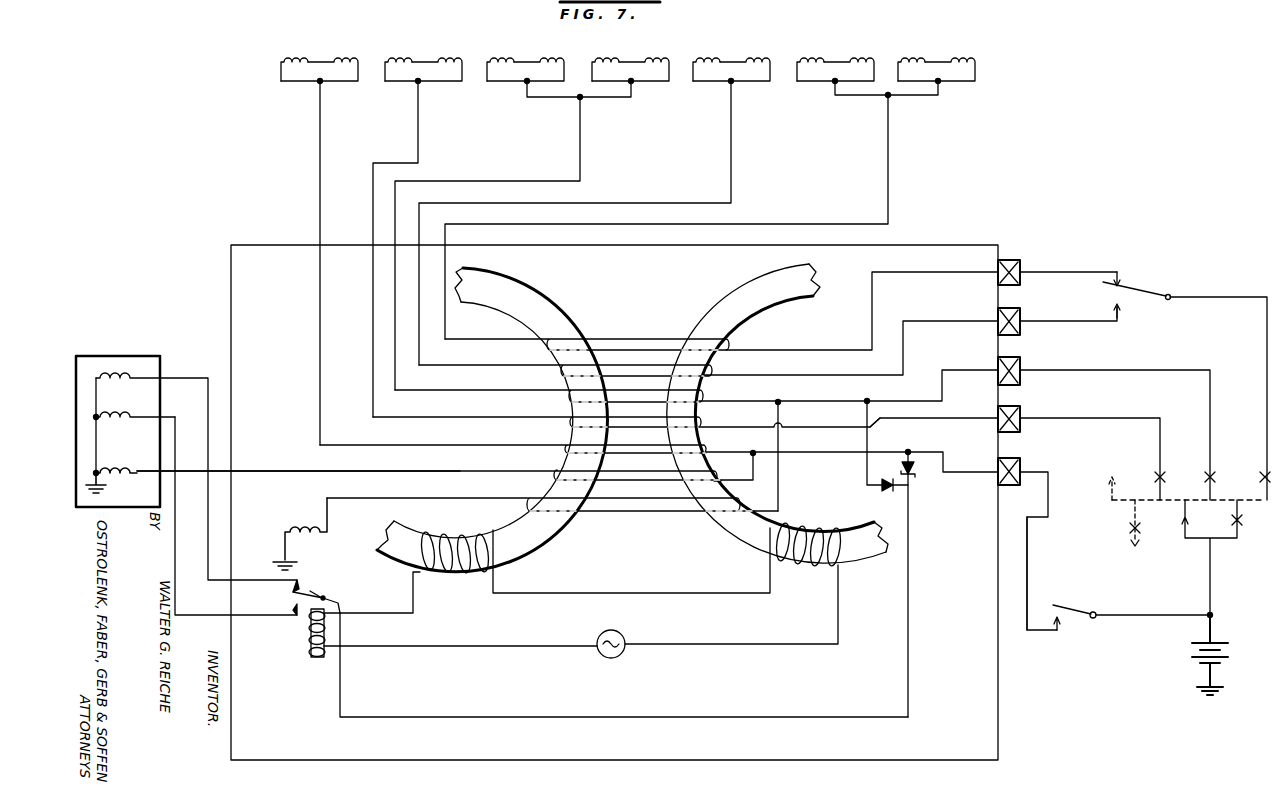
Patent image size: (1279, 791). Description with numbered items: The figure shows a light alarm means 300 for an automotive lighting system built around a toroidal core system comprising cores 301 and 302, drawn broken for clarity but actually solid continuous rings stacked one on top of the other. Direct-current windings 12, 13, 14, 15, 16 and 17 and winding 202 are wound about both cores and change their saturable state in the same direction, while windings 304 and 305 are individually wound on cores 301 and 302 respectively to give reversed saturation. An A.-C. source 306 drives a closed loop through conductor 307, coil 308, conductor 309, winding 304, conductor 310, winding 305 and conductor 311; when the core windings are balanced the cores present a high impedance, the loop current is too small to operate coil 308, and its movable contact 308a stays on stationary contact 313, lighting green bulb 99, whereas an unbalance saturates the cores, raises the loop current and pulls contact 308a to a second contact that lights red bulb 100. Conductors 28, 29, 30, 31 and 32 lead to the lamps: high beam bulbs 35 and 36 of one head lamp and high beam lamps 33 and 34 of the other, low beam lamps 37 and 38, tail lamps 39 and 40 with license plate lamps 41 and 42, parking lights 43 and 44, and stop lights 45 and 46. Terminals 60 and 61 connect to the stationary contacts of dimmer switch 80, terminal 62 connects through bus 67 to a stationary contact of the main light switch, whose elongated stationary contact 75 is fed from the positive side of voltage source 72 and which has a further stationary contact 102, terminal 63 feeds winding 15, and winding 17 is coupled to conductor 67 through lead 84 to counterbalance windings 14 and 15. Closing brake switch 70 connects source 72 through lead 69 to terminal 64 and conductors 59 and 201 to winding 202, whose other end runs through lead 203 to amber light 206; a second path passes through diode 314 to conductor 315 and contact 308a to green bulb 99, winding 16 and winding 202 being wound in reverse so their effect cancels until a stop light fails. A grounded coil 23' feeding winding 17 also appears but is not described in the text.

The winding 12 is at (640, 340).
The winding 13 is at (650, 356).
The winding 14 is at (652, 382).
The winding 15 is at (650, 408).
The winding 16 is at (646, 436).
The winding 17 is at (622, 512).
The coil 23' is at (297, 534).
The conductor 28 is at (888, 142).
The conductor 29 is at (731, 140).
The conductor 30 is at (580, 138).
The conductor 31 is at (418, 130).
The conductor 32 is at (320, 128).
The high beam lamp 33 is at (811, 62).
The high beam lamp 34 is at (861, 62).
The high beam bulb 35 is at (911, 62).
The high beam bulb 36 is at (963, 62).
The low beam head lamp 37 is at (761, 62).
The low beam head lamp 38 is at (706, 62).
The tail light lamp 39 is at (659, 62).
The tail light lamp 40 is at (605, 62).
The license plate lamp 41 is at (553, 62).
The license plate lamp 42 is at (501, 62).
The parking light 43 is at (451, 62).
The parking light 44 is at (399, 62).
The stop light 45 is at (348, 62).
The stop light 46 is at (295, 62).
The conductor 59 is at (943, 455).
The terminal 60 is at (1020, 280).
The terminal 61 is at (1020, 330).
The terminal 62 is at (1020, 380).
The terminal 63 is at (1020, 427).
The terminal 64 is at (1004, 485).
The bus 67 is at (948, 424).
The lead 69 is at (1029, 547).
The brake switch 70 is at (1080, 590).
The voltage source 72 is at (1195, 660).
The elongated stationary contact 75 is at (1196, 556).
The dimmer switch 80 is at (1146, 275).
The lead 84 is at (778, 442).
The green bulb 99 is at (135, 377).
The red bulb 100 is at (112, 420).
The stationary contact 102 is at (122, 356).
The conductor 201 is at (748, 476).
The winding 202 is at (650, 462).
The lead 203 is at (492, 463).
The amber light 206 is at (113, 480).
The light alarm means 300 is at (197, 217).
The core 301 is at (525, 560).
The core 302 is at (724, 522).
The winding 304 is at (462, 575).
The winding 305 is at (824, 570).
The A.-C. source 306 is at (603, 656).
The conductor 307 is at (438, 650).
The coil 308 is at (308, 642).
The movable contact 308a is at (327, 596).
The conductor 309 is at (388, 598).
The conductor 310 is at (648, 574).
The conductor 311 is at (722, 650).
The stationary contact 313 is at (300, 588).
The diode 314 is at (205, 395).
The conductor 315 is at (505, 692).